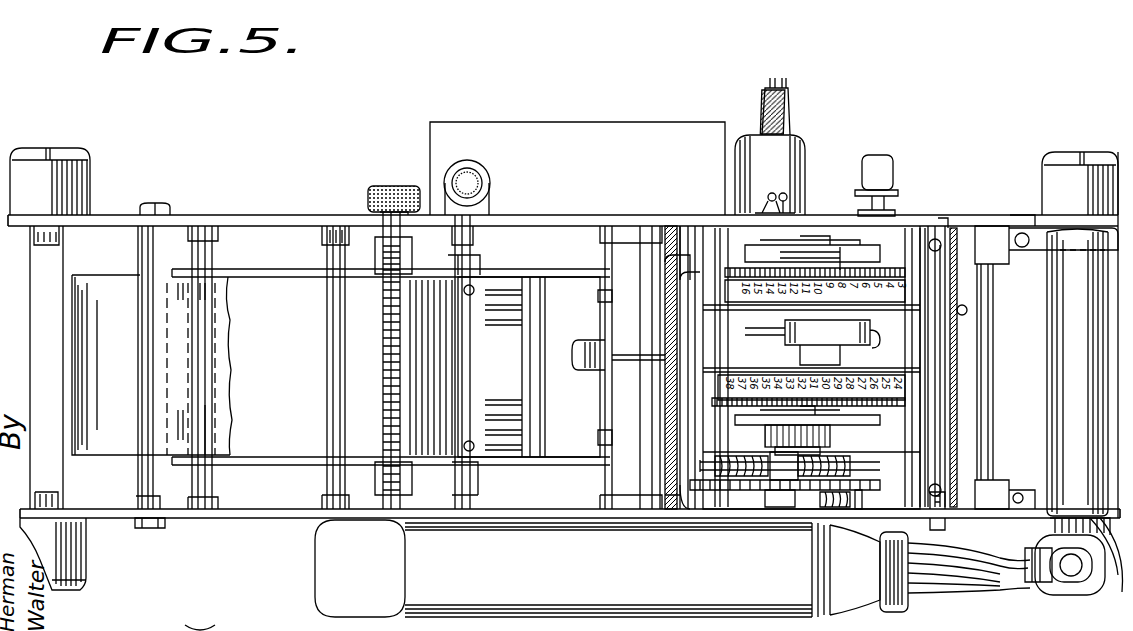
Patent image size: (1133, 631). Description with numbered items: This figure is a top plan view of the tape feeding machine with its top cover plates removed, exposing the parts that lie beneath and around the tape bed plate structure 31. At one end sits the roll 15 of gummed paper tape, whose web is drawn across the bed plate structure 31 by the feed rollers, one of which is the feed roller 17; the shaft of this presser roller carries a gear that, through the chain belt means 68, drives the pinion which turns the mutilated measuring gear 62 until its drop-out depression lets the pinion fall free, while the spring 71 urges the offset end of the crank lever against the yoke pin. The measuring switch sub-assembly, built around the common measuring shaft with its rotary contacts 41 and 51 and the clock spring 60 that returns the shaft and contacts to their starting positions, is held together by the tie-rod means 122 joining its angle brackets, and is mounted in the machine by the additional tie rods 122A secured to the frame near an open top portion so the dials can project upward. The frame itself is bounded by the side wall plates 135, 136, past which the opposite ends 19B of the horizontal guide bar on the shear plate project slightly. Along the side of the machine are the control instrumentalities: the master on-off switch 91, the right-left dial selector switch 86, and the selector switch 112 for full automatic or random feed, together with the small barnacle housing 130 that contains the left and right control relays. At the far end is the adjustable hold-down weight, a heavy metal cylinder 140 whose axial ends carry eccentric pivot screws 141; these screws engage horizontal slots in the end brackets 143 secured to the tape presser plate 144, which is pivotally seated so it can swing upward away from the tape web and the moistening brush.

The roll of gummed paper tape 15 is at (106, 286).
The feed roller 17 is at (595, 345).
The guide bar ends 19B is at (943, 222).
The tape bed plate structure 31 is at (580, 426).
The rotary contact 41 is at (800, 413).
The rotary contact 51 is at (812, 245).
The clock spring 60 is at (817, 342).
The mutilated gear 62 is at (855, 442).
The chain belt means 68 is at (706, 490).
The spring 71 is at (755, 462).
The right-left dial selector switch 86 is at (894, 160).
The master on-off switch 91 is at (770, 195).
The selector switch 112 is at (785, 196).
The tie-rod means 122 is at (718, 326).
The additional tie rods 122A is at (716, 237).
The barnacle housing 130 is at (591, 135).
The side wall plate 135 is at (912, 518).
The side wall plate 136 is at (921, 226).
The heavy metal cylinder 140 is at (1062, 435).
The screws 141 is at (1062, 215).
The end bracket 143 is at (1030, 226).
The tape presser plate 144 is at (1040, 398).